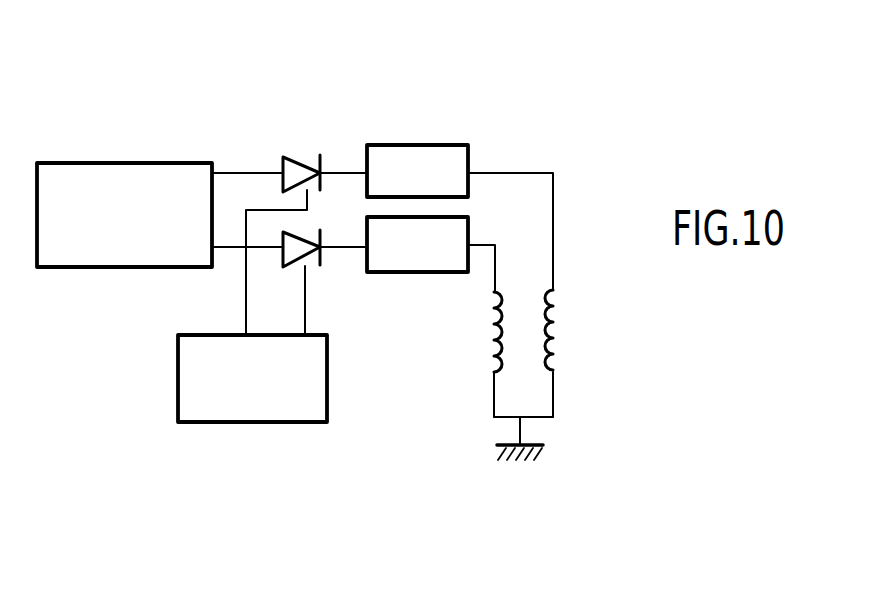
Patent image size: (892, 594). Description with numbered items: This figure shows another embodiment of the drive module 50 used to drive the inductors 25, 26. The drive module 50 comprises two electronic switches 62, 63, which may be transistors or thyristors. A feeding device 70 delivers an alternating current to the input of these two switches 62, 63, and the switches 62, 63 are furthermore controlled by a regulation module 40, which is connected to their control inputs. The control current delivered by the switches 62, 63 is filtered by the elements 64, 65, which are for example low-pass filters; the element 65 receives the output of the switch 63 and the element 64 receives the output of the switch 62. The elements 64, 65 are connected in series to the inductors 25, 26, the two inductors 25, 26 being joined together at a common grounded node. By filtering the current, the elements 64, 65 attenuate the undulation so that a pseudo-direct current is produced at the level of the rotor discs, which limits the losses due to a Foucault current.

The feeding device 70 is at (76, 163).
The regulation module 40 is at (178, 395).
The electronic switch 63 is at (297, 156).
The electronic switch 62 is at (300, 268).
The low-pass filter element 65 is at (445, 145).
The low-pass filter element 64 is at (400, 272).
The drive module 50 is at (407, 108).
The inductor 26 is at (495, 330).
The inductor 25 is at (553, 330).